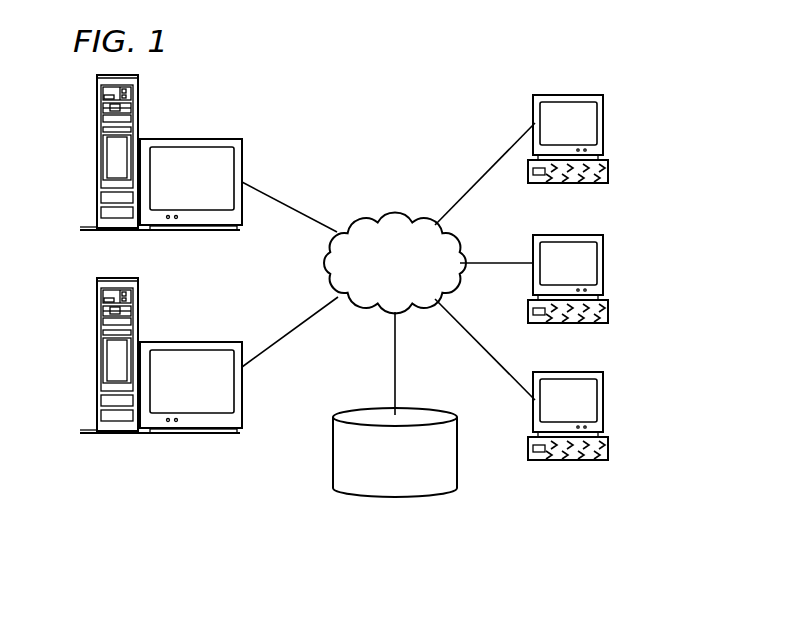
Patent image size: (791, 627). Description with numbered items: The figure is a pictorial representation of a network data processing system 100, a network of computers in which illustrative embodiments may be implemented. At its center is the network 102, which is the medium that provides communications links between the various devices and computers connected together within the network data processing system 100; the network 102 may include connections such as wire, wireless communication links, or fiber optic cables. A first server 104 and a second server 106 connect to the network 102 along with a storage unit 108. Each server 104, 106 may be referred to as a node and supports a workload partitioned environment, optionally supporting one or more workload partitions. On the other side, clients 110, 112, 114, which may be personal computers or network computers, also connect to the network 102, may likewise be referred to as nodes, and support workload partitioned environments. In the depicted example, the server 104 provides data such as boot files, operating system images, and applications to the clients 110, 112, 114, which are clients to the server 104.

The network data processing system 100 is at (450, 103).
The network 102 is at (369, 216).
The server 104 is at (97, 158).
The server 106 is at (97, 360).
The storage unit 108 is at (378, 497).
The client 110 is at (603, 125).
The client 112 is at (603, 263).
The client 114 is at (603, 400).